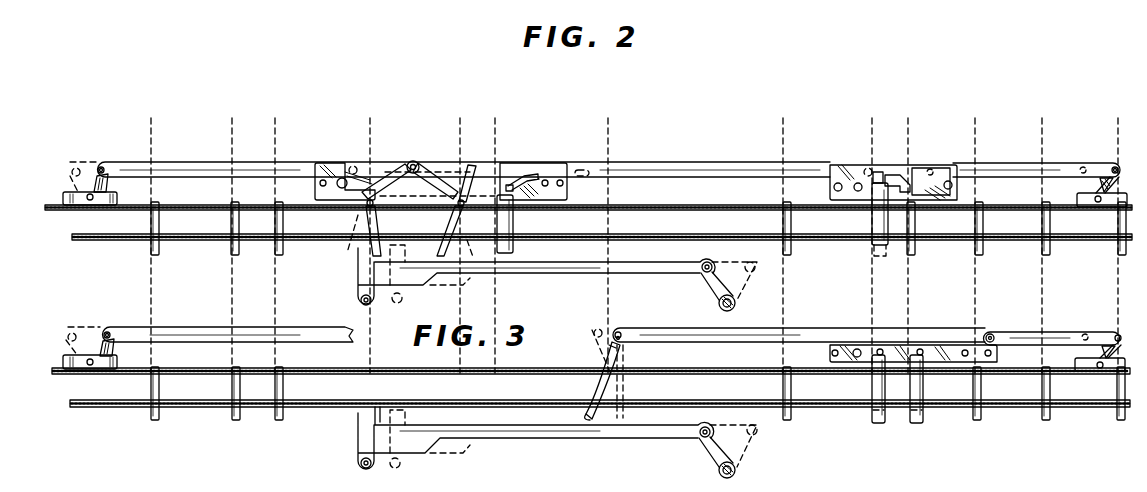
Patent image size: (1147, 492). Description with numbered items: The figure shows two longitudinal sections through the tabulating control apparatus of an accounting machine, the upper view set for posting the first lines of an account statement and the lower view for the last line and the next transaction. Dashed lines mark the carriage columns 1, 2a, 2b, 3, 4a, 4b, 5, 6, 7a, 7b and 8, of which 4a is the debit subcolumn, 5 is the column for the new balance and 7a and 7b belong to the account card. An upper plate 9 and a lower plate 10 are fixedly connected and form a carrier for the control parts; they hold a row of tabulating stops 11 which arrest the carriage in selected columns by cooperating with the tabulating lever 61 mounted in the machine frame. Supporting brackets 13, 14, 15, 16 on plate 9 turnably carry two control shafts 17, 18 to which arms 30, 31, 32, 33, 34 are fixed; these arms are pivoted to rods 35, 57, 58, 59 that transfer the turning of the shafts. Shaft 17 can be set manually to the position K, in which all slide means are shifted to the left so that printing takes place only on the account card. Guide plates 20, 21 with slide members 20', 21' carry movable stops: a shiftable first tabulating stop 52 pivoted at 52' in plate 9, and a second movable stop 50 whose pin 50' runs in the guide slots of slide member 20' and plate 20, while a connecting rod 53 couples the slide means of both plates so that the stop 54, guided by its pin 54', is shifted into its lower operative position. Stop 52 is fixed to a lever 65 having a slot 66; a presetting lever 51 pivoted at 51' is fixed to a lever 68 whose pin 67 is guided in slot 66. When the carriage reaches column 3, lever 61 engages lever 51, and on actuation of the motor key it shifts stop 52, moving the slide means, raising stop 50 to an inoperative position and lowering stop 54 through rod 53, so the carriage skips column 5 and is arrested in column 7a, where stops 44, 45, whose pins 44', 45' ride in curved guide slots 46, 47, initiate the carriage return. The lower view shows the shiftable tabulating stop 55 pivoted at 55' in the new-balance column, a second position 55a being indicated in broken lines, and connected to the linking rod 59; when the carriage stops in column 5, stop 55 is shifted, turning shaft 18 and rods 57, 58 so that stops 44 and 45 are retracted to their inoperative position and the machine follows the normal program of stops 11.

In FIG. 2, the column 1 is at (153, 235).
In FIG. 2, the section line 2a is at (233, 235).
In FIG. 2, the section line 2b is at (276, 235).
In FIG. 2, the column 3 is at (371, 235).
In FIG. 2, the debit subcolumn 4a is at (460, 235).
In FIG. 2, the subcolumn 4b is at (496, 235).
In FIG. 2, the column for the new balance 5 is at (608, 235).
In FIG. 2, the column 6 is at (783, 235).
In FIG. 2, the column 7a is at (872, 235).
In FIG. 2, the column 7b is at (908, 235).
In FIG. 2, the column 8 is at (975, 235).
In FIG. 2, the upper plate 9 is at (199, 199).
In FIG. 3, the upper plate 9 is at (200, 369).
In FIG. 2, the lower plate 10 is at (192, 252).
In FIG. 3, the lower plate 10 is at (199, 410).
In FIG. 2, the tabulating stops 11 is at (275, 253).
In FIG. 3, the tabulating stops 11 is at (152, 421).
In FIG. 2, the supporting bracket 13 is at (132, 189).
In FIG. 3, the supporting bracket 13 is at (135, 352).
In FIG. 2, the supporting bracket 14 is at (112, 196).
In FIG. 3, the supporting bracket 14 is at (115, 360).
In FIG. 2, the supporting bracket 15 is at (1079, 189).
In FIG. 3, the supporting bracket 15 is at (1082, 355).
In FIG. 2, the supporting bracket 16 is at (1078, 197).
In FIG. 3, the supporting bracket 16 is at (1078, 364).
In FIG. 2, the control shaft 17 is at (90, 205).
In FIG. 3, the control shaft 17 is at (90, 371).
In FIG. 2, the control shaft 18 is at (1097, 204).
In FIG. 3, the control shaft 18 is at (1098, 371).
In FIG. 2, the guide plate 20 is at (345, 169).
In FIG. 2, the slide member 20' is at (473, 169).
In FIG. 2, the guide plate 21 is at (893, 199).
In FIG. 2, the slide member 21' is at (938, 167).
In FIG. 2, the arm 30 is at (60, 180).
In FIG. 3, the arm 30 is at (92, 327).
In FIG. 2, the arm 31 is at (80, 190).
In FIG. 3, the arm 31 is at (98, 334).
In FIG. 2, the arm 32 is at (1086, 165).
In FIG. 3, the arm 32 is at (1084, 328).
In FIG. 2, the arm 33 is at (1086, 165).
In FIG. 3, the arm 33 is at (1084, 328).
In FIG. 2, the arm 34 is at (1098, 183).
In FIG. 3, the arm 34 is at (1088, 352).
In FIG. 2, the rod 35 is at (190, 163).
In FIG. 3, the rod 35 is at (190, 328).
In FIG. 3, the stop member 44 is at (866, 403).
In FIG. 3, the pin 44' is at (860, 326).
In FIG. 3, the stop member 45 is at (908, 403).
In FIG. 3, the pin 45' is at (932, 327).
In FIG. 3, the curved guide slot 46 is at (883, 347).
In FIG. 2, the curved guide slot 47 is at (897, 180).
In FIG. 2, the second movable tabulator stop 50 is at (524, 229).
In FIG. 2, the pin 50' is at (531, 202).
In FIG. 2, the presetting lever 51 is at (377, 231).
In FIG. 2, the pivot 51' is at (350, 215).
In FIG. 2, the shiftable first tabulating stop 52 is at (449, 231).
In FIG. 2, the pivot 52' is at (478, 215).
In FIG. 2, the connecting rod 53 is at (695, 163).
In FIG. 2, the tabulator stop 54 is at (865, 224).
In FIG. 2, the pin 54' is at (887, 161).
In FIG. 3, the shiftable tabulating stop 55 is at (591, 381).
In FIG. 3, the pivot 55' is at (630, 351).
In FIG. 3, the lever alternate position 55a is at (618, 388).
In FIG. 2, the rod 57 is at (1036, 158).
In FIG. 3, the rod 57 is at (1052, 321).
In FIG. 2, the rod 58 is at (1008, 163).
In FIG. 3, the rod 58 is at (1012, 332).
In FIG. 3, the linking rod 59 is at (760, 328).
In FIG. 2, the tabulating lever 61 is at (523, 268).
In FIG. 3, the tabulating lever 61 is at (535, 430).
In FIG. 2, the lever 65 is at (470, 166).
In FIG. 2, the slot 66 is at (445, 164).
In FIG. 2, the pin 67 is at (415, 161).
In FIG. 2, the lever 68 is at (385, 168).
In FIG. 2, the position K is at (76, 166).